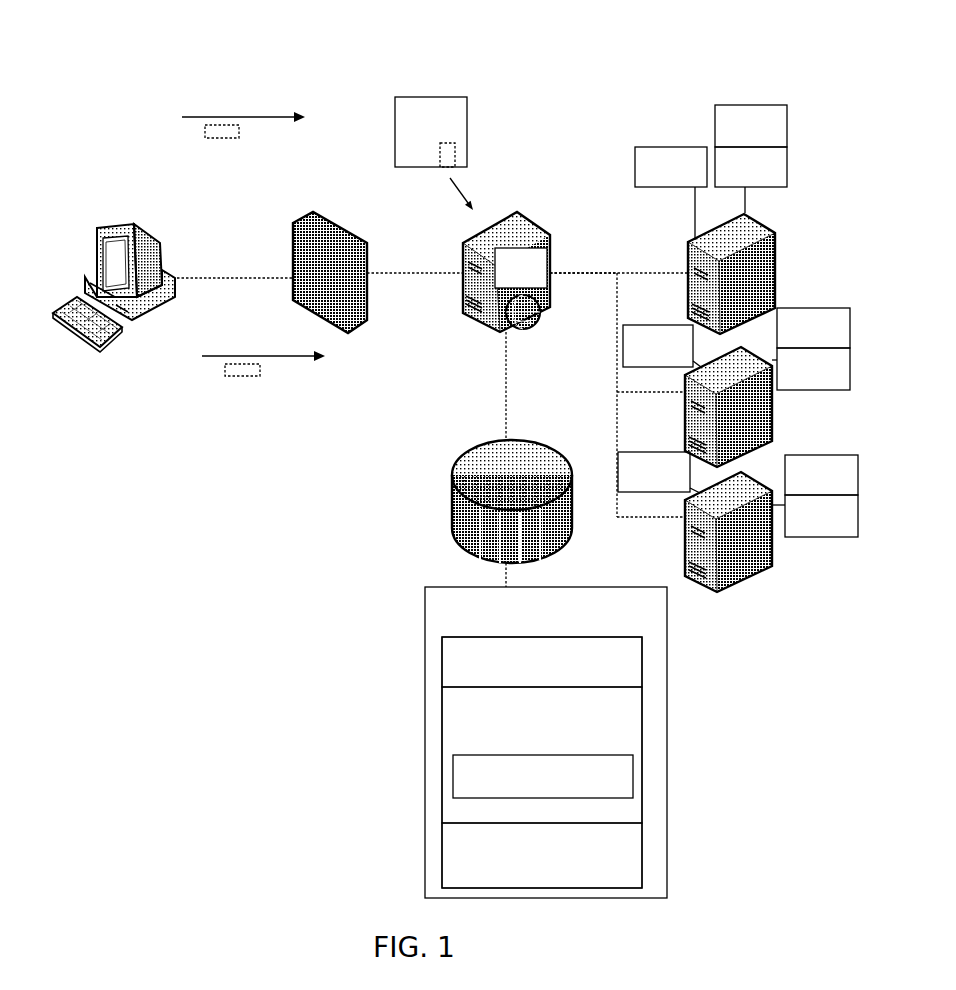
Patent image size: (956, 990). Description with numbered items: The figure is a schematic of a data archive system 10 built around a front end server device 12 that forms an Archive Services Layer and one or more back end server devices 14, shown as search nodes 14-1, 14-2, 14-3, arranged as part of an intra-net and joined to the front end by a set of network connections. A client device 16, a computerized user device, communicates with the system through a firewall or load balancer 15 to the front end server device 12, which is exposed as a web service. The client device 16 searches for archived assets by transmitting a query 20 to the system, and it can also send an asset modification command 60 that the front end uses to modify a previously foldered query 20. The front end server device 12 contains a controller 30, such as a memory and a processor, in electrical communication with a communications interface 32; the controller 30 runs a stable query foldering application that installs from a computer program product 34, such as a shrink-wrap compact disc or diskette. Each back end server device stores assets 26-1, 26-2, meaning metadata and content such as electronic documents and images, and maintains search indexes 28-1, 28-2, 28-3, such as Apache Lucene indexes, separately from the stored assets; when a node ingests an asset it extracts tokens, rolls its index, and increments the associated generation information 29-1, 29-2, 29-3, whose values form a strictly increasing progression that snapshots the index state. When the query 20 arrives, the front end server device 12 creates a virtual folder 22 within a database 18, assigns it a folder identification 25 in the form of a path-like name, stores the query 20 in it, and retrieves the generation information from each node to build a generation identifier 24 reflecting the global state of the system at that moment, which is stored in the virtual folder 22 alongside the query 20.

The data archive system 10 is at (587, 82).
The front end server device 12 is at (532, 220).
The back end server devices 14 is at (795, 202).
The back end server device 14-1 is at (775, 272).
The back end server device 14-2 is at (773, 418).
The back end server device 14-3 is at (772, 555).
The firewall or load balancer 15 is at (340, 226).
The client device 16 is at (143, 232).
The database 18 is at (452, 465).
The query 20 is at (229, 151).
The virtual folder 22 is at (463, 616).
The generation identifier 24 is at (478, 718).
The folder identification 25 is at (478, 855).
The assets 26-1 is at (650, 177).
The assets 26-2 is at (637, 356).
The search index 28-1 is at (730, 177).
The search index 28-2 is at (792, 379).
The search index 28-3 is at (800, 526).
The generation information 29-1 is at (730, 136).
The generation information 29-2 is at (792, 338).
The generation information 29-3 is at (800, 485).
The controller 30 is at (509, 279).
The communications interface 32 is at (561, 261).
The computer program product 34 is at (467, 135).
The asset modification command 60 is at (249, 390).